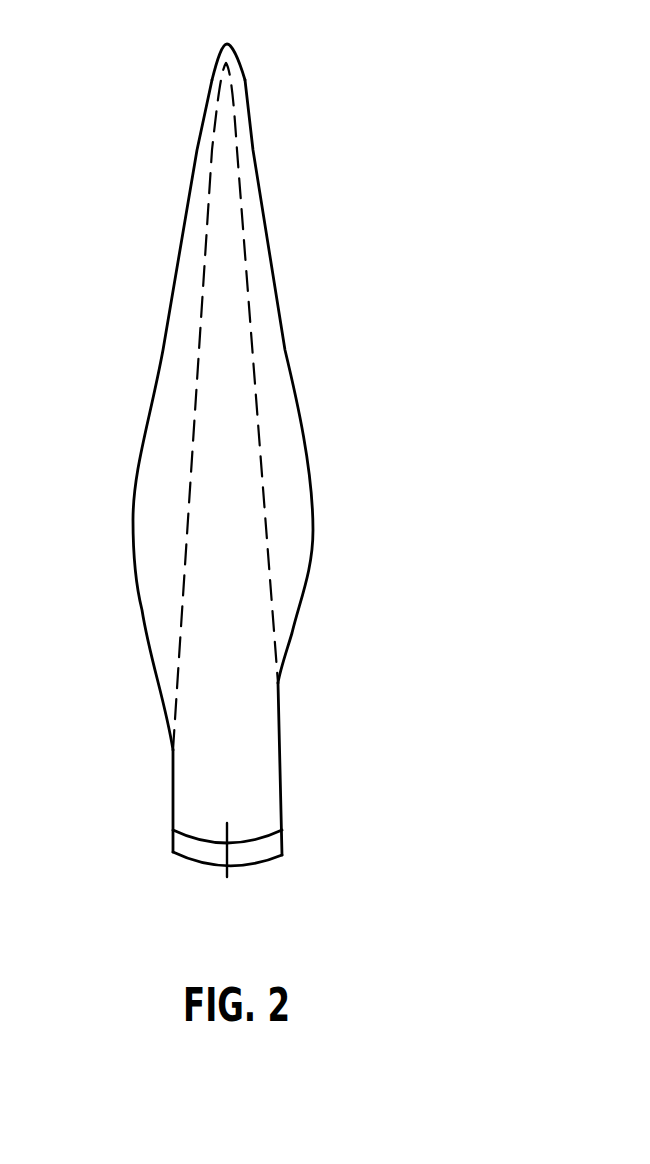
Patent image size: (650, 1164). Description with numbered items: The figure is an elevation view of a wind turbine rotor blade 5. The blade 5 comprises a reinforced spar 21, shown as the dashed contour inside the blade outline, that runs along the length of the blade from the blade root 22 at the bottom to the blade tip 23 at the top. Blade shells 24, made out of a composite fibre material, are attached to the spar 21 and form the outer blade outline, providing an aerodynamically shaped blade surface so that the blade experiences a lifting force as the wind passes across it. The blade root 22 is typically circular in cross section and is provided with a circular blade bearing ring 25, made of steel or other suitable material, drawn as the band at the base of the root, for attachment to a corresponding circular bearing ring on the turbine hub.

The blade 5 is at (260, 458).
The reinforced spar 21 is at (250, 557).
The blade root 22 is at (150, 813).
The blade tip 23 is at (215, 60).
The blade shells 24 is at (253, 242).
The blade bearing ring 25 is at (265, 850).